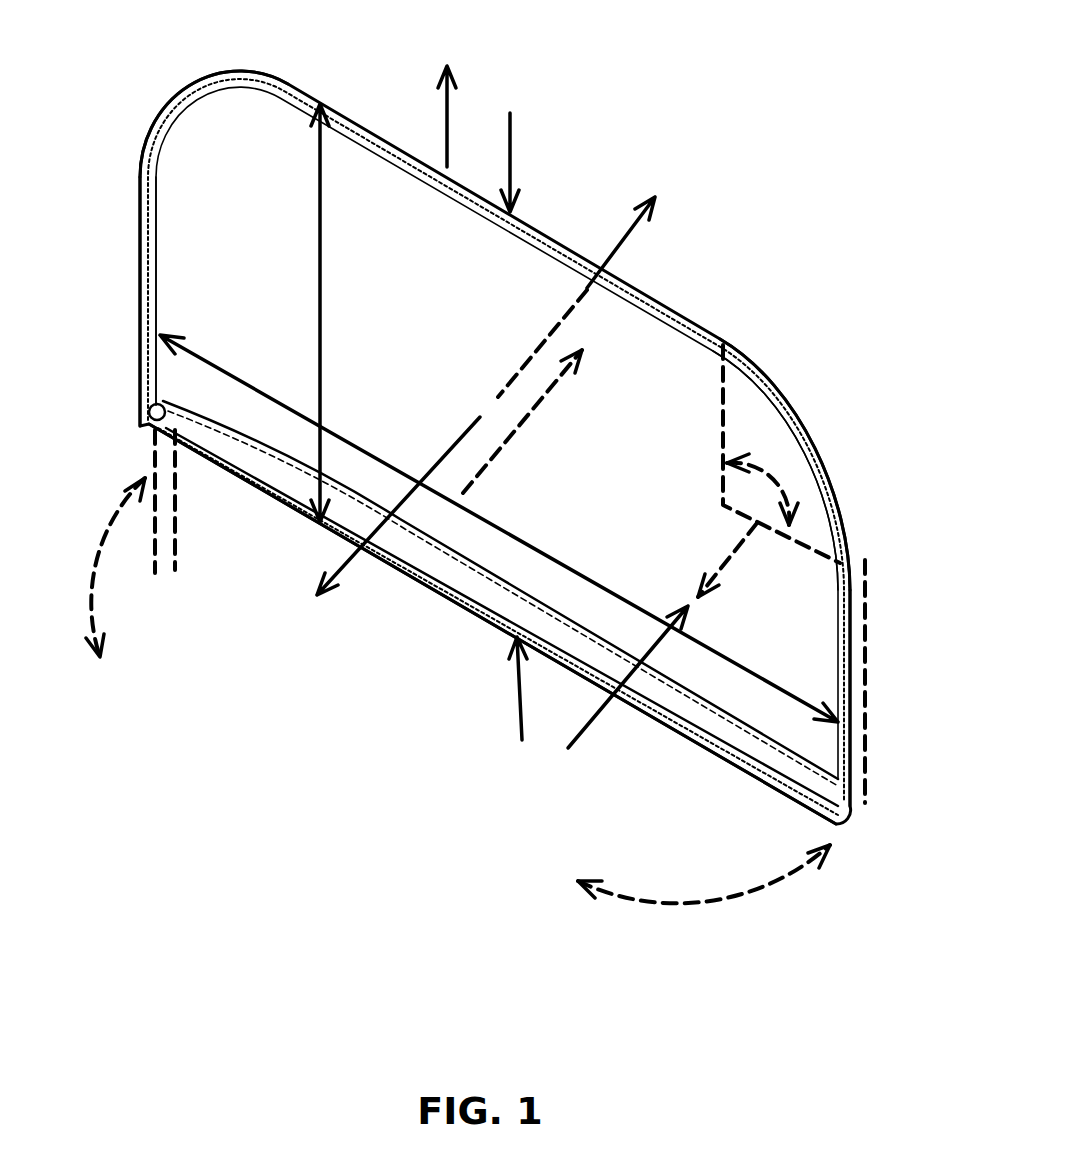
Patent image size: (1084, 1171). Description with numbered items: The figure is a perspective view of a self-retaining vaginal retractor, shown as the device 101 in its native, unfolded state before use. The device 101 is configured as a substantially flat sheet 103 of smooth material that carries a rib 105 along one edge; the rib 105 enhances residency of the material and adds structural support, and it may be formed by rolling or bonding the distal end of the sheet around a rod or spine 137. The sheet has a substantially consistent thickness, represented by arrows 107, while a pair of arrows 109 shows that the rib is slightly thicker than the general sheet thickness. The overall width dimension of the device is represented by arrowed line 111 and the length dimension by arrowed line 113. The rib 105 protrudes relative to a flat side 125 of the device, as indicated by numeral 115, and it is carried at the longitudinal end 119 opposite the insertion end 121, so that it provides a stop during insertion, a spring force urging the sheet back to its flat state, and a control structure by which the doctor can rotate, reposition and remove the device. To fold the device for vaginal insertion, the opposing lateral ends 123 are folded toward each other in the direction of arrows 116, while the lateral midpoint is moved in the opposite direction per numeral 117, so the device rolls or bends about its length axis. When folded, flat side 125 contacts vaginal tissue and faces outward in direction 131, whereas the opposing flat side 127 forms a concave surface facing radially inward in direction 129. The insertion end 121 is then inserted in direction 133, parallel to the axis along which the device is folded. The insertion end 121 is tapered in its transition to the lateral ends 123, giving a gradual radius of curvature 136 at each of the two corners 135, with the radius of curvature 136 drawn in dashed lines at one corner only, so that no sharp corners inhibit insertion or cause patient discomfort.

The device 101 is at (763, 285).
The flat sheet 103 is at (795, 712).
The rib 105 is at (780, 793).
The thickness 107 is at (181, 237).
The rib thickness 109 is at (233, 493).
The width dimension 111 is at (513, 530).
The length dimension 113 is at (320, 268).
The rib protrusion 115 is at (892, 700).
The folding direction arrows 116 is at (103, 657).
The midpoint movement direction 117 is at (533, 403).
The opposite longitudinal end 119 is at (512, 705).
The insertion end 121 is at (507, 144).
The opposing lateral ends 123 is at (124, 194).
The flat side 125 is at (807, 463).
The opposing flat side 127 is at (623, 696).
The radially inward direction 129 is at (379, 529).
The outward direction 131 is at (603, 287).
The insertion direction 133 is at (446, 100).
The corners 135 is at (189, 88).
The radius of curvature 136 is at (785, 503).
The rod or spine 137 is at (677, 717).